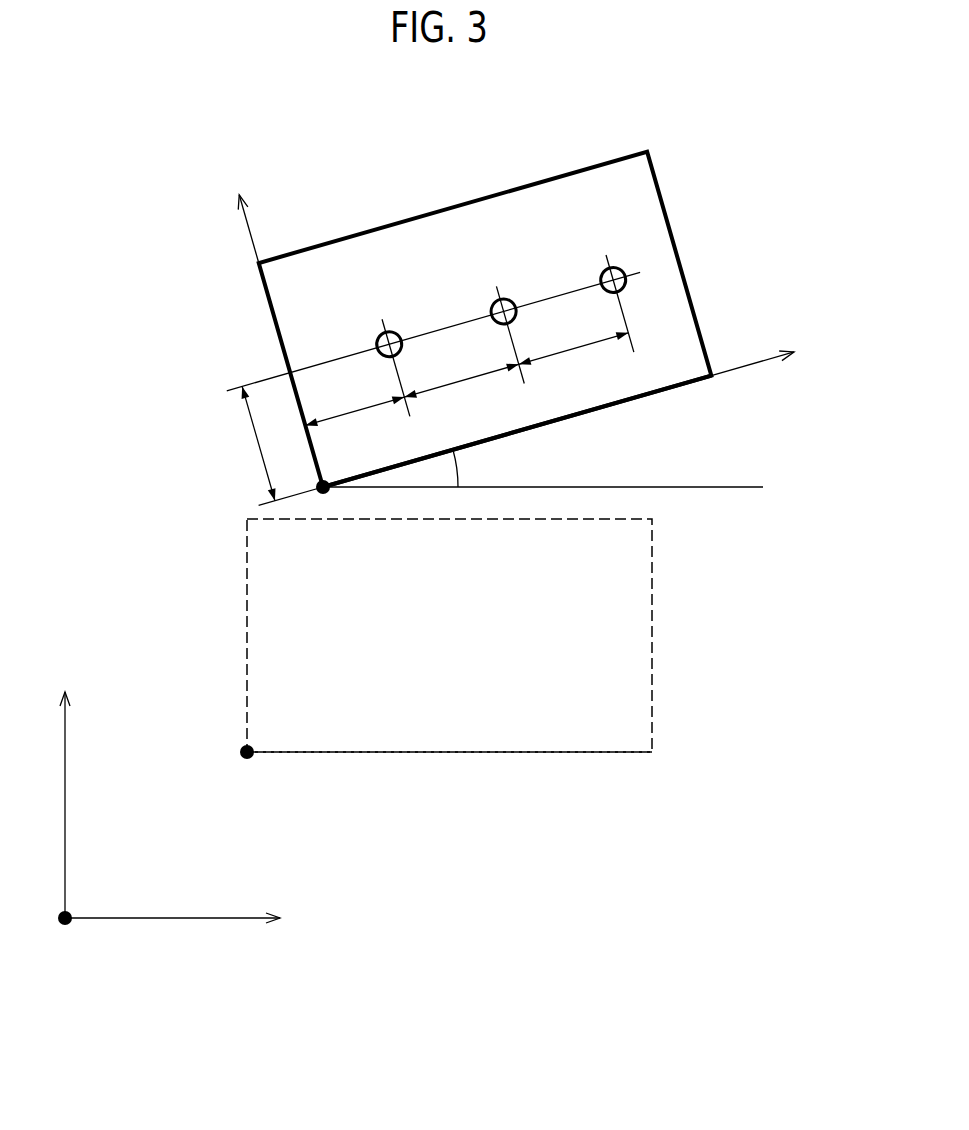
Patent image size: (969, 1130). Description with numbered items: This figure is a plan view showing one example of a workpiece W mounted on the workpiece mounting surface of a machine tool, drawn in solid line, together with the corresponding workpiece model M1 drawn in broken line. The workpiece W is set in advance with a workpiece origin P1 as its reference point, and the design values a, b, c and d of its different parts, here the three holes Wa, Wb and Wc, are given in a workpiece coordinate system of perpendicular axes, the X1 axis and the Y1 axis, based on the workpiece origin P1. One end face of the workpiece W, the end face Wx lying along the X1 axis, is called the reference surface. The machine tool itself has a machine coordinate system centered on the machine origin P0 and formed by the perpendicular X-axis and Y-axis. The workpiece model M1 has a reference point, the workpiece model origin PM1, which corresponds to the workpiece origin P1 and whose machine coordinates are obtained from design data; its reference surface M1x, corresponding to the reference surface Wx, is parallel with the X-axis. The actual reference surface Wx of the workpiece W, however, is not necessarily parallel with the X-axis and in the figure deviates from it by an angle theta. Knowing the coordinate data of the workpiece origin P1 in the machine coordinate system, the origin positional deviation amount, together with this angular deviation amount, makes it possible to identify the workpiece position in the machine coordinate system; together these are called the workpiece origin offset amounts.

The workpiece W is at (522, 184).
The hole Wa is at (390, 332).
The hole Wb is at (503, 298).
The hole Wc is at (613, 268).
The end face Wx is at (682, 383).
The workpiece model M1 is at (660, 644).
The reference surface M1x is at (563, 753).
The workpiece origin P1 is at (338, 498).
The workpiece model origin PM1 is at (251, 771).
The machine origin P0 is at (69, 936).
The X-axis X is at (182, 917).
The Y-axis Y is at (64, 786).
The X1 axis X1 is at (767, 357).
The Y1 axis Y1 is at (243, 213).
The design value a is at (354, 404).
The design value b is at (461, 375).
The design value c is at (574, 343).
The design value d is at (274, 439).